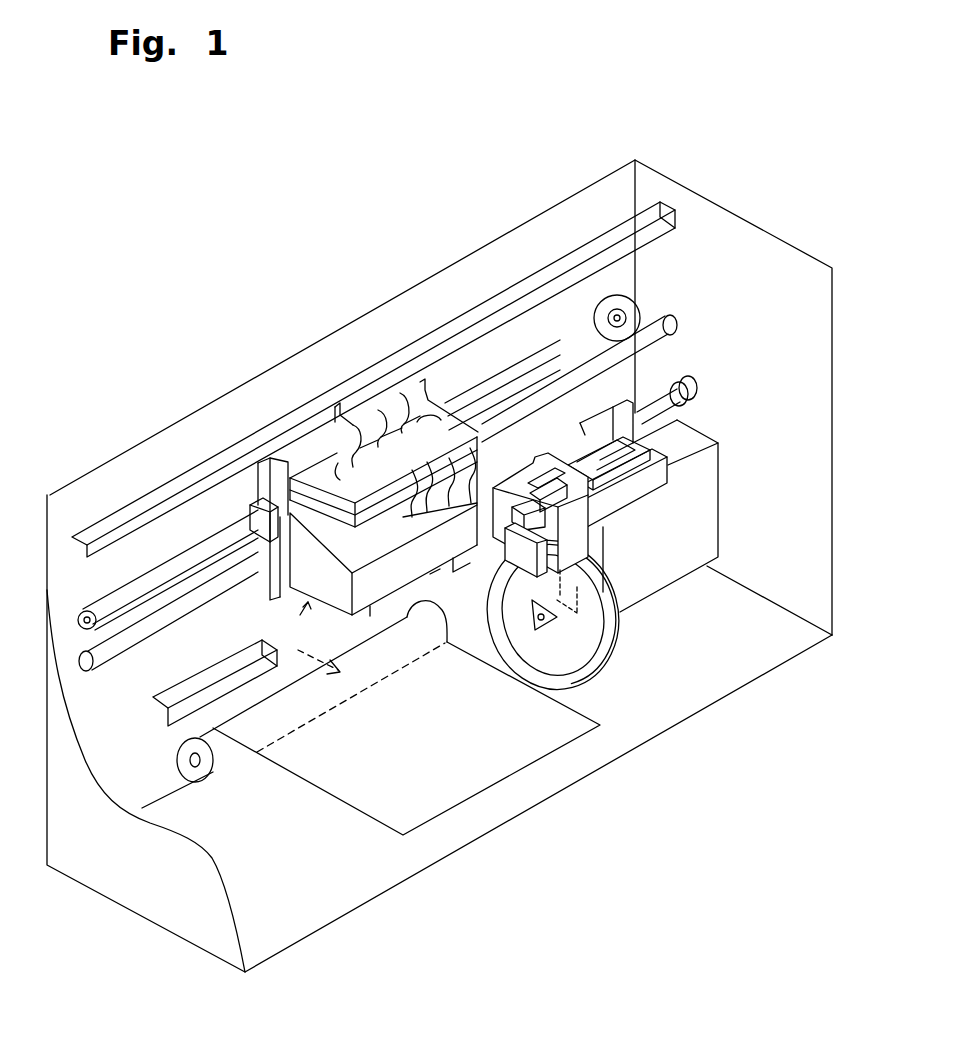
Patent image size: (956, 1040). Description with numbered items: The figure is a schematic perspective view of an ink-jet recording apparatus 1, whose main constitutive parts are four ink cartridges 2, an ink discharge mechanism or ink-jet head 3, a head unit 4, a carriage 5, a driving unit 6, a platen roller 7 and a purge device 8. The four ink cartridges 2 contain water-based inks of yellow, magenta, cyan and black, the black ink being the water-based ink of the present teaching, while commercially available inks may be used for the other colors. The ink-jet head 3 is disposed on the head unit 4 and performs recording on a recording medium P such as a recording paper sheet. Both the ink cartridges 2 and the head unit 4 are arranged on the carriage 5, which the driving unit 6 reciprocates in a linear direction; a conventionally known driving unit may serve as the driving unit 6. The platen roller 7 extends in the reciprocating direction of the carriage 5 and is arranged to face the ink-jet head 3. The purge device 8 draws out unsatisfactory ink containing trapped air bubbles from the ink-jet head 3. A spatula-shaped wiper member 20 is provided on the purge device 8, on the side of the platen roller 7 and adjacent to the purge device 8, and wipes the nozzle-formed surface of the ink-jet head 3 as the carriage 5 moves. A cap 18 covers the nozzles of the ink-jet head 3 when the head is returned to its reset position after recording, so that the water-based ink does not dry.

The ink-jet recording apparatus 1 is at (330, 186).
The ink cartridges 2 is at (388, 408).
The ink discharge mechanism (ink-jet head) 3 is at (432, 578).
The head unit 4 is at (300, 615).
The carriage 5 is at (268, 479).
The driving unit 6 is at (660, 185).
The platen roller 7 is at (230, 750).
The purge device 8 is at (777, 545).
The cap 18 is at (695, 435).
The wiper member 20 is at (530, 523).
The recording medium P is at (392, 808).